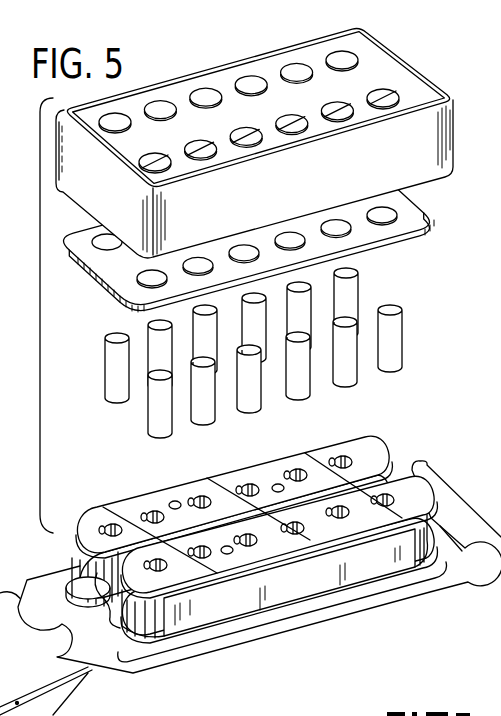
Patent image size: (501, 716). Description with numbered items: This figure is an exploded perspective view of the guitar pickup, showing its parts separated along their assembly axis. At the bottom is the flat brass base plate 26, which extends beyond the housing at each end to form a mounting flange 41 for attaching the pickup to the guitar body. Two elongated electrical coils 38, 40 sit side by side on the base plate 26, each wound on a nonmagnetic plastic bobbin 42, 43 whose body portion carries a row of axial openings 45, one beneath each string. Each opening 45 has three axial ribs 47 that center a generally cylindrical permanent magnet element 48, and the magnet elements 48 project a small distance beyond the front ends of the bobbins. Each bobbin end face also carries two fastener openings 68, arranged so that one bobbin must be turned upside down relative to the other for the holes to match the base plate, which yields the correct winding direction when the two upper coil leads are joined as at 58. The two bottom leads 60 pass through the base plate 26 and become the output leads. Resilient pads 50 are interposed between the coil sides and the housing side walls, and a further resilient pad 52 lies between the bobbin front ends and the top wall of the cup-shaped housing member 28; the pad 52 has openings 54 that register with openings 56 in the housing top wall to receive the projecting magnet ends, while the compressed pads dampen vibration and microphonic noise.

The base plate 26 is at (465, 511).
The housing member 28 is at (426, 70).
The coil 38 is at (77, 563).
The coil 40 is at (150, 640).
The mounting flange 41 is at (443, 493).
The bobbin 42 is at (96, 518).
The bobbin 43 is at (213, 568).
The openings 45 is at (300, 472).
The axial ribs 47 is at (152, 515).
The permanent magnet element 48 is at (356, 283).
The pad 50 is at (340, 570).
The pad 52 is at (428, 233).
The openings 54 is at (384, 206).
The openings 56 is at (340, 58).
The connection of upper leads 58 is at (78, 583).
The bottom leads 60 is at (44, 690).
The openings 68 is at (175, 501).